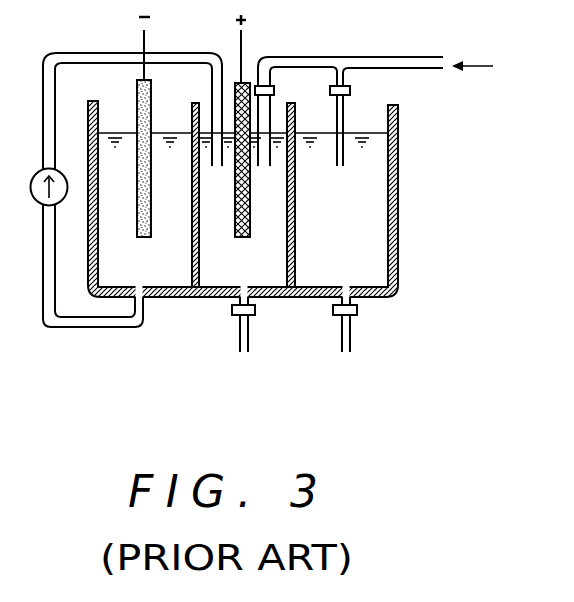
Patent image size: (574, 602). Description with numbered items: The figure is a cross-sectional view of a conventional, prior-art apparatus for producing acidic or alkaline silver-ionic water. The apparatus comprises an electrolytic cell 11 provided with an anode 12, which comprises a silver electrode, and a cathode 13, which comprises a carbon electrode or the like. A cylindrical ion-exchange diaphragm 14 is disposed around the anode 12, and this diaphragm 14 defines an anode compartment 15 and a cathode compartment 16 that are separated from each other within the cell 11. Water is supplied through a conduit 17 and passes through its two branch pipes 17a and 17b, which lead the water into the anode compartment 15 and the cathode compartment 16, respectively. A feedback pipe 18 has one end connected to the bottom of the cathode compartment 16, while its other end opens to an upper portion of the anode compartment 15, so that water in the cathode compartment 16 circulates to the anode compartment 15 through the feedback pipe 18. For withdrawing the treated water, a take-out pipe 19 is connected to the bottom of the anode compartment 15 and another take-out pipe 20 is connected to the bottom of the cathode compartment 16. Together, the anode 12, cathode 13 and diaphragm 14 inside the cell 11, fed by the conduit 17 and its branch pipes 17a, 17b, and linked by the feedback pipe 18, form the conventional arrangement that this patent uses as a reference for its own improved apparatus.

The electrolytic cell 11 is at (404, 203).
The anode 12 is at (250, 208).
The cathode 13 is at (152, 197).
The ion-exchange diaphragm 14 is at (296, 187).
The anode compartment 15 is at (252, 271).
The cathode compartment 16 is at (350, 271).
The conduit 17 is at (417, 57).
The branch pipe 17a is at (272, 112).
The branch pipe 17b is at (346, 112).
The feedback pipe 18 is at (80, 328).
The take-out pipe 19 is at (240, 343).
The take-out pipe 20 is at (342, 345).